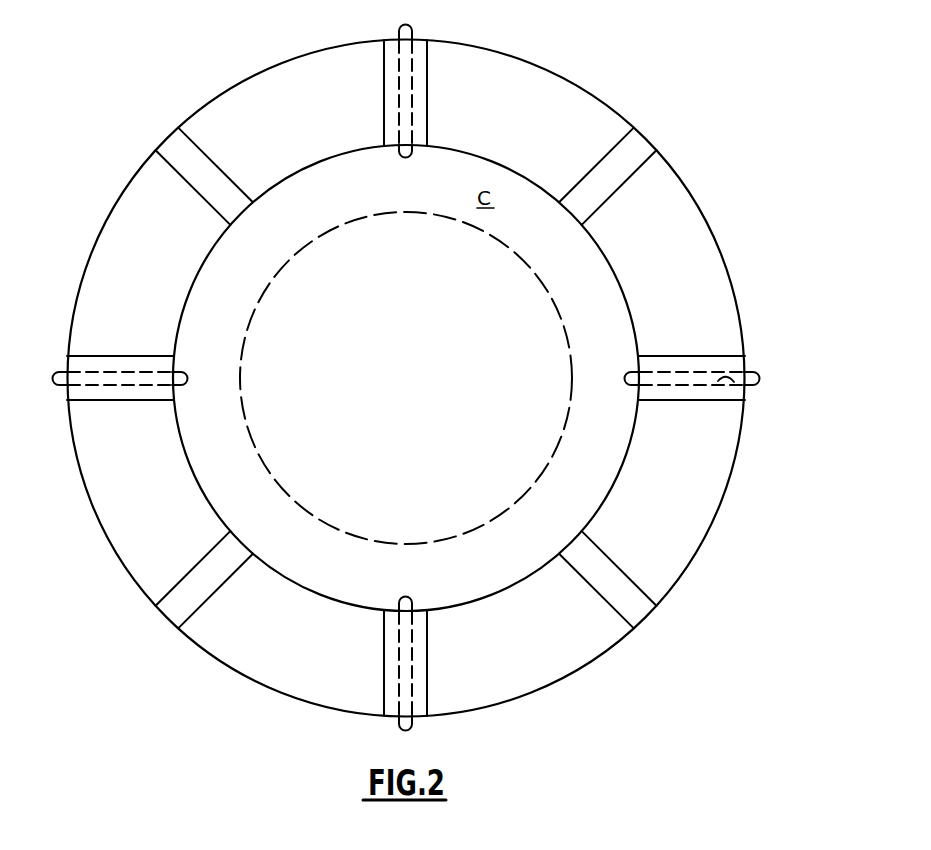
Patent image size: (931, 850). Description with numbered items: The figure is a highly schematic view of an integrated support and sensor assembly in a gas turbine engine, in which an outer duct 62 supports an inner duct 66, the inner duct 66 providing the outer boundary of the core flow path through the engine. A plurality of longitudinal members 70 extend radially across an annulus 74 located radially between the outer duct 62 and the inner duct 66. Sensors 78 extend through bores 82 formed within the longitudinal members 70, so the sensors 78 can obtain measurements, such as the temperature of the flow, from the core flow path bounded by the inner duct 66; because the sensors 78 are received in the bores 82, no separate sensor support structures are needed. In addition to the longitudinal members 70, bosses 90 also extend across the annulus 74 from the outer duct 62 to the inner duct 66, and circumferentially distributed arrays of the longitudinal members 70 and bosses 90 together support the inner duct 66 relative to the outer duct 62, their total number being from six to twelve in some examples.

The outer duct 62 is at (688, 188).
The inner duct 66 is at (601, 258).
The longitudinal members 70 is at (726, 354).
The annulus 74 is at (409, 376).
The sensors 78 is at (759, 378).
The bores 82 is at (737, 387).
The bosses 90 is at (624, 573).